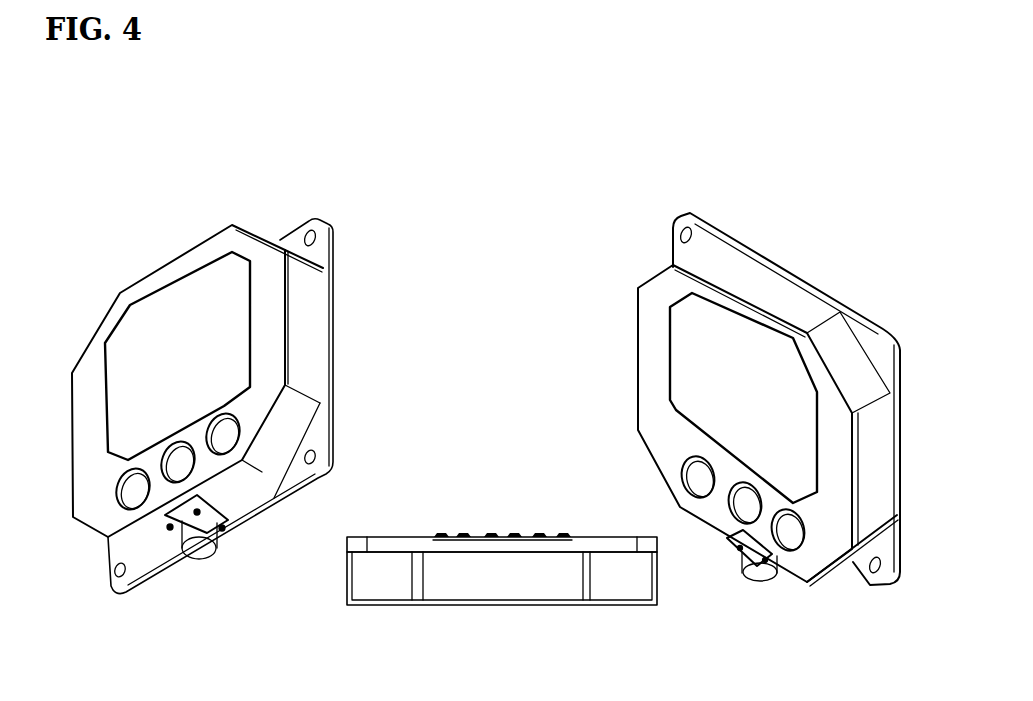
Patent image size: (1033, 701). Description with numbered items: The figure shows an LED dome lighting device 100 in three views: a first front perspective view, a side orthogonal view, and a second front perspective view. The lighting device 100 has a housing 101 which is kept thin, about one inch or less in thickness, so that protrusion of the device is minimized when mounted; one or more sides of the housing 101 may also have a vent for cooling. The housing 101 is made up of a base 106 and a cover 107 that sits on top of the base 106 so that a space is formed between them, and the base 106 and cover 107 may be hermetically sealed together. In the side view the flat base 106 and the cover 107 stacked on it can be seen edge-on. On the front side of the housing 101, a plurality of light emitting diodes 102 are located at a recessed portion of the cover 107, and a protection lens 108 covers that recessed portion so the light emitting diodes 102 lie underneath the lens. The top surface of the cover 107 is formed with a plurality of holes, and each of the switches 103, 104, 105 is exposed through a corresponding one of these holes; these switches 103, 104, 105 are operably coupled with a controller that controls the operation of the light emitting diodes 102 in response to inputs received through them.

The lighting device 100 is at (217, 355).
The housing 101 is at (307, 317).
The light emitting diodes 102 is at (188, 327).
The switch 103 is at (227, 440).
The switch 104 is at (175, 470).
The switch 105 is at (130, 495).
The base 106 is at (400, 538).
The cover 107 is at (517, 608).
The protection lens 108 is at (738, 348).